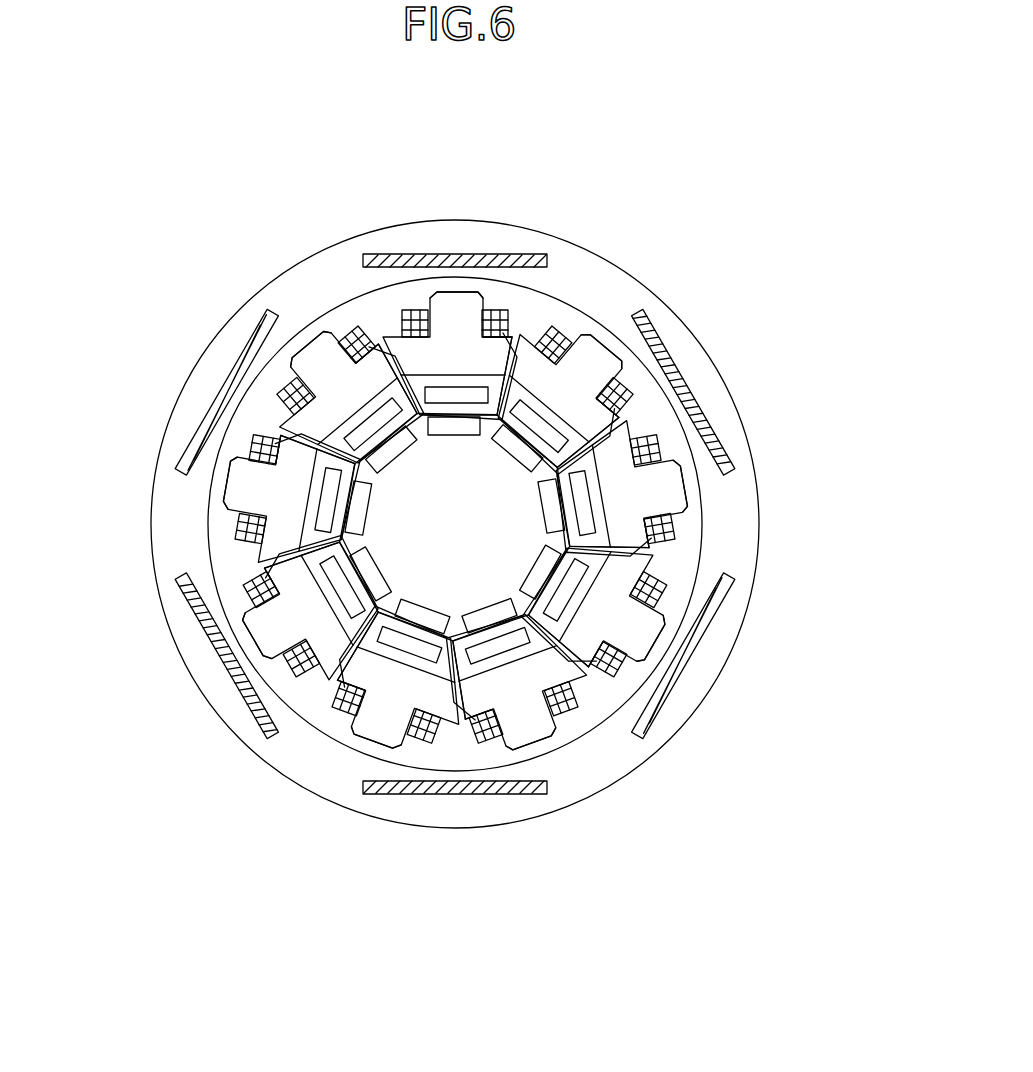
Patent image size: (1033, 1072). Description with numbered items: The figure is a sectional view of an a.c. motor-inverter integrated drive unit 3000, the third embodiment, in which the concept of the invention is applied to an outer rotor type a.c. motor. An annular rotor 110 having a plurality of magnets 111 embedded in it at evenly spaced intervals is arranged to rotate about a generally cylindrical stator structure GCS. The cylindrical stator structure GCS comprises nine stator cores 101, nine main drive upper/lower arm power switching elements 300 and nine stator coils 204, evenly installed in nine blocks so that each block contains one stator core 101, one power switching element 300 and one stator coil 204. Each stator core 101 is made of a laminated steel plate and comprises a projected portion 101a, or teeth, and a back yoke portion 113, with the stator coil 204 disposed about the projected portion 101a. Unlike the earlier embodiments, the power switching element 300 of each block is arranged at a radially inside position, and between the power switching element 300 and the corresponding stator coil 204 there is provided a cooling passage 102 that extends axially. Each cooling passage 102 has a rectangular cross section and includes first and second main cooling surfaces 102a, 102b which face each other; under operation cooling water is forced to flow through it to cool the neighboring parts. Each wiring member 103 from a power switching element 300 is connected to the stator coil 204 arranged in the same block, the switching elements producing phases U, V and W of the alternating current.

The a.c. motor-inverter integrated drive unit 3000 is at (784, 137).
The rotor 110 is at (267, 298).
The magnets 111 is at (417, 253).
The stator core 101 is at (535, 357).
The projected portion 101a is at (595, 347).
The cooling passage 102 is at (613, 418).
The first main cooling surface 102a is at (595, 428).
The second main cooling surface 102b is at (556, 412).
The back yoke portion 113 is at (495, 385).
The power switching element 300 is at (447, 428).
The stator coil 204 is at (507, 318).
The wiring member 103 is at (605, 447).
The cylindrical stator structure GCS is at (698, 505).